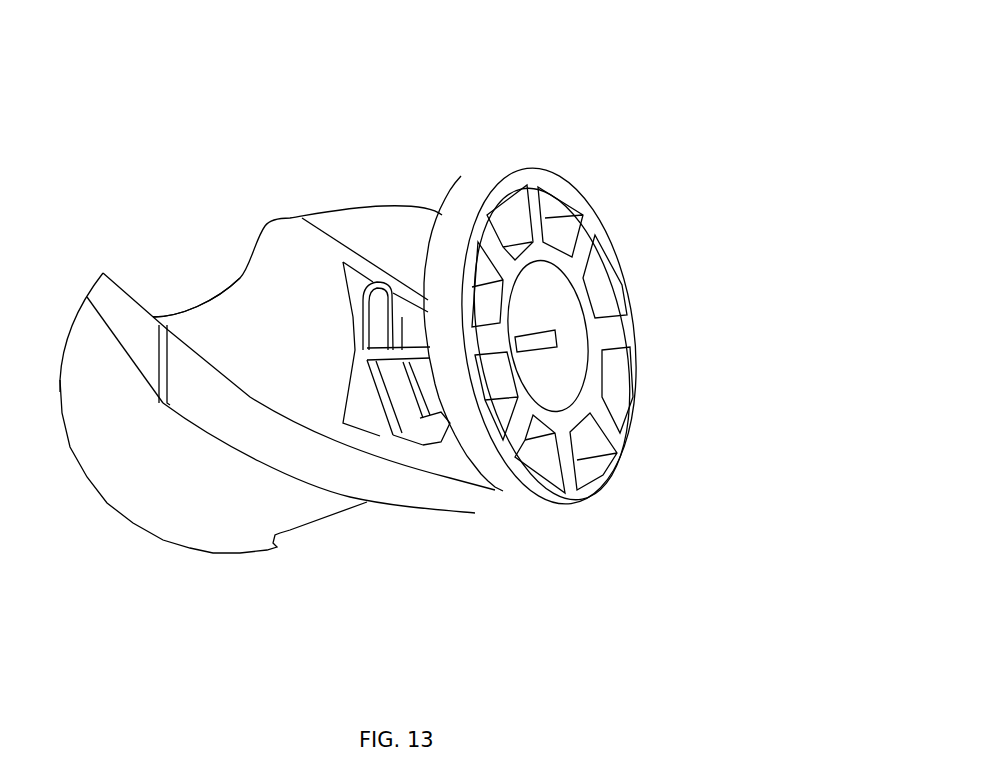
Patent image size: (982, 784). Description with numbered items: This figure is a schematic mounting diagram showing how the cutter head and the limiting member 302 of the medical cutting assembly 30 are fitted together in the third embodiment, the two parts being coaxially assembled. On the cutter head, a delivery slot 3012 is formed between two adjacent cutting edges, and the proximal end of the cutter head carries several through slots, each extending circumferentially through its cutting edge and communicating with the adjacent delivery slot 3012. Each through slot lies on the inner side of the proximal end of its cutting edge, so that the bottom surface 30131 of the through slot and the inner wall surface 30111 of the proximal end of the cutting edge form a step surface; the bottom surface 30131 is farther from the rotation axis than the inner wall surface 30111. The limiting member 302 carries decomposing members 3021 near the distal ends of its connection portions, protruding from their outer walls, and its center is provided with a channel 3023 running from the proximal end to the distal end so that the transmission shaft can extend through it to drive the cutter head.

The medical cutting assembly 30 is at (283, 607).
The limiting member 302 is at (589, 265).
The delivery slot 3012 is at (283, 303).
The decomposing member 3021 is at (383, 297).
The channel 3023 is at (570, 370).
The inner wall surface of the proximal end of the cutting edge 30111 is at (447, 427).
The bottom surface of the through slot 30131 is at (380, 436).